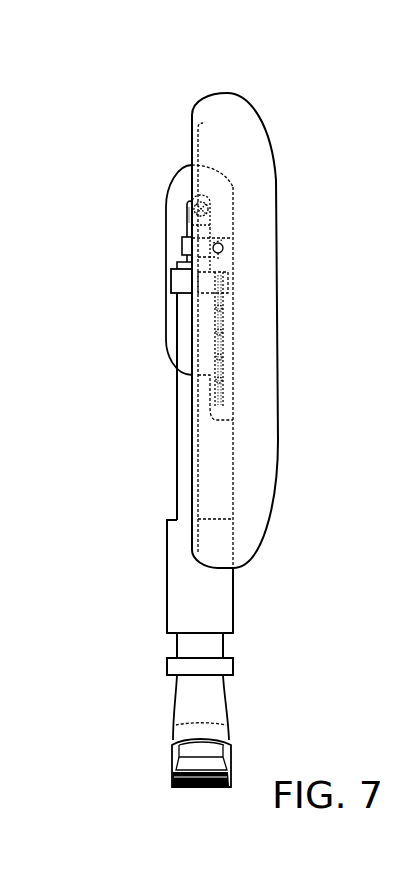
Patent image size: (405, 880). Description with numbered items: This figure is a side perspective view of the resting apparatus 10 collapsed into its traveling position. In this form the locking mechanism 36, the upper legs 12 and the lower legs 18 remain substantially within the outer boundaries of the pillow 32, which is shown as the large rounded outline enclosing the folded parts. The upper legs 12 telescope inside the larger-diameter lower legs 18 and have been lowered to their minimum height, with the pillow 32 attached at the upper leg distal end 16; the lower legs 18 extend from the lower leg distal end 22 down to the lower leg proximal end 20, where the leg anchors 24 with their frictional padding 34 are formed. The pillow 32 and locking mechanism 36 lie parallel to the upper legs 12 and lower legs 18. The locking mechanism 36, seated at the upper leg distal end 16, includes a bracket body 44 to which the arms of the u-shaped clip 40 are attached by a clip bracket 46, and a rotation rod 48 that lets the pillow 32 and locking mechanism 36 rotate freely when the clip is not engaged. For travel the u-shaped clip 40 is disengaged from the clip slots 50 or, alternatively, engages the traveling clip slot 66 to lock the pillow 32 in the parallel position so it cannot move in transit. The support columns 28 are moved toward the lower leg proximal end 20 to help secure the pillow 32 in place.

The resting apparatus 10 is at (144, 387).
The upper legs 12 is at (185, 261).
The upper leg distal end 16 is at (182, 243).
The lower legs 18 is at (176, 485).
The lower leg proximal end 20 is at (227, 667).
The lower leg distal end 22 is at (171, 285).
The leg anchors 24 is at (175, 741).
The support columns 28 is at (166, 573).
The pillow 32 is at (268, 500).
The frictional padding 34 is at (182, 788).
The locking mechanism 36 is at (186, 222).
The u-shaped clip 40 is at (222, 260).
The bracket body 44 is at (180, 177).
The clip bracket 46 is at (222, 240).
The rotation rod 48 is at (187, 210).
The clip slots 50 is at (220, 334).
The traveling clip slot 66 is at (222, 407).